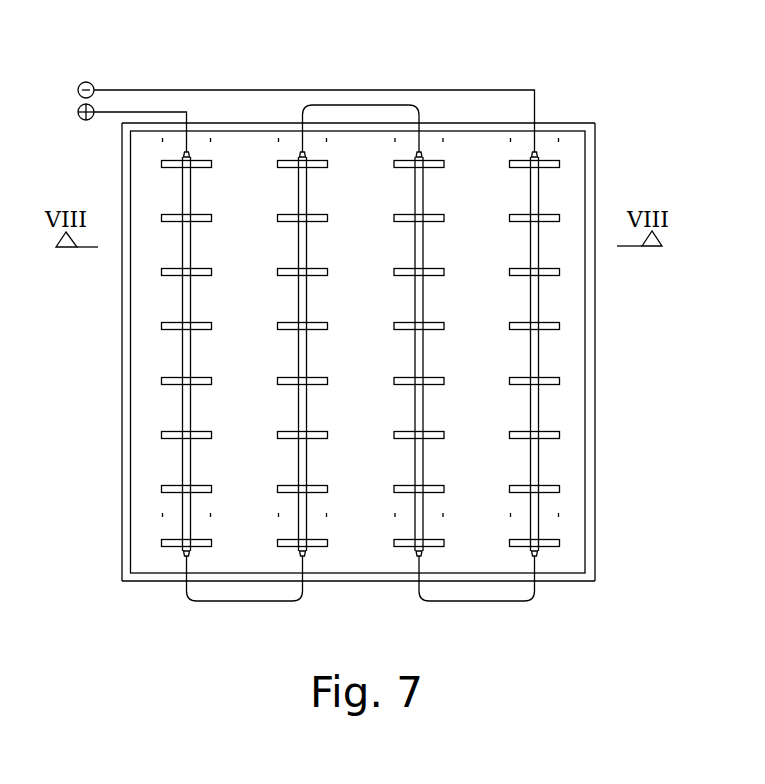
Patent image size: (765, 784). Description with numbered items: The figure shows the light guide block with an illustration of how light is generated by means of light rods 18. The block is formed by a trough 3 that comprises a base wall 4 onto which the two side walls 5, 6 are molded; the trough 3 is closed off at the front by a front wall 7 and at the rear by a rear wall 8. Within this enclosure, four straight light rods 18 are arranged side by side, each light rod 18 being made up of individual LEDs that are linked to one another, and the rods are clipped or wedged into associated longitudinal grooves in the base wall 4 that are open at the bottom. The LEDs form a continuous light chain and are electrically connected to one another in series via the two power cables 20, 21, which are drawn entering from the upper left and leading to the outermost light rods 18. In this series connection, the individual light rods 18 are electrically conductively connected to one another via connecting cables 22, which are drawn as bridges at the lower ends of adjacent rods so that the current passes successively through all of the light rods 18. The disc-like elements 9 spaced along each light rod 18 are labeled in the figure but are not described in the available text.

The trough 3 is at (594, 186).
The base wall 4 is at (567, 308).
The side wall 5 is at (587, 354).
The side wall 6 is at (128, 352).
The front wall 7 is at (355, 583).
The rear wall 8 is at (466, 122).
The electrode discs 9 is at (172, 387).
The light rod 18 is at (298, 250).
The power cable 20 is at (258, 89).
The power cable 21 is at (143, 110).
The connecting cable 22 is at (243, 602).